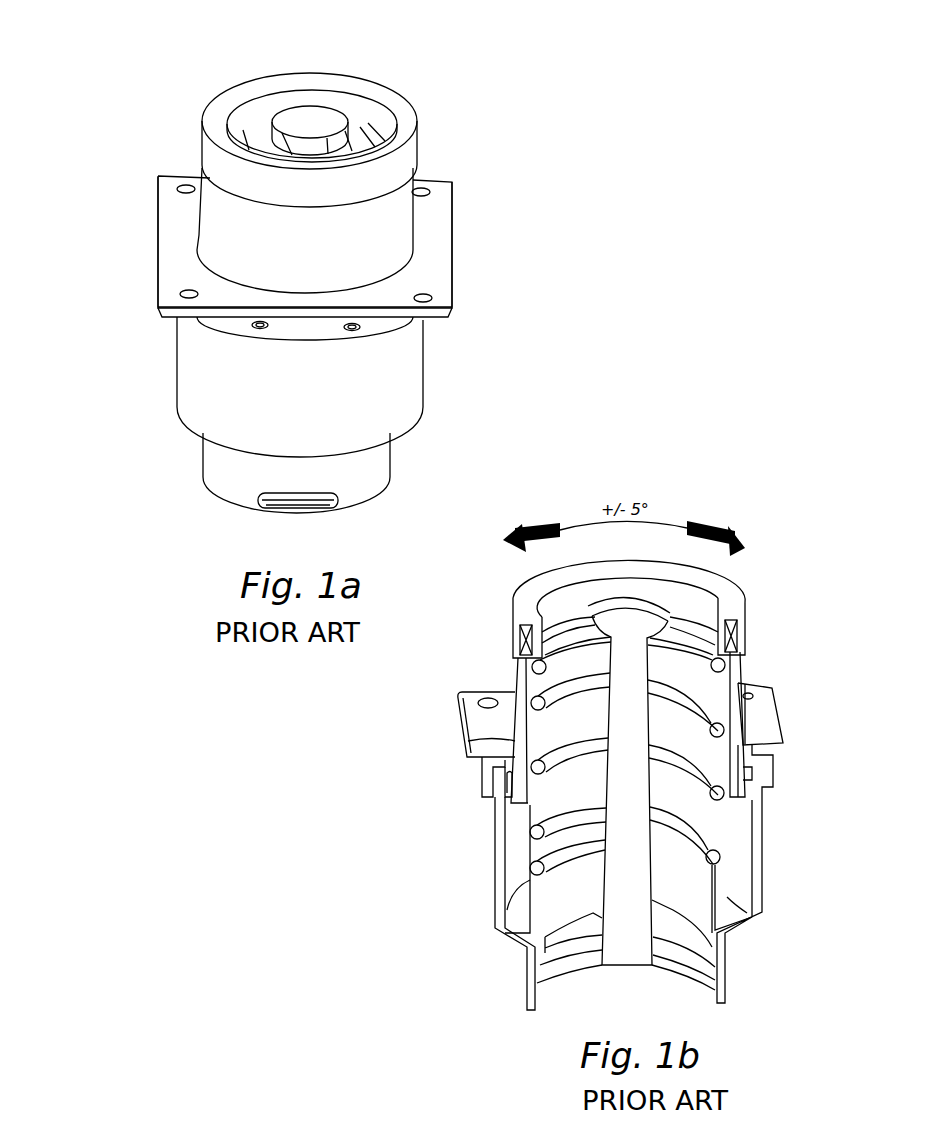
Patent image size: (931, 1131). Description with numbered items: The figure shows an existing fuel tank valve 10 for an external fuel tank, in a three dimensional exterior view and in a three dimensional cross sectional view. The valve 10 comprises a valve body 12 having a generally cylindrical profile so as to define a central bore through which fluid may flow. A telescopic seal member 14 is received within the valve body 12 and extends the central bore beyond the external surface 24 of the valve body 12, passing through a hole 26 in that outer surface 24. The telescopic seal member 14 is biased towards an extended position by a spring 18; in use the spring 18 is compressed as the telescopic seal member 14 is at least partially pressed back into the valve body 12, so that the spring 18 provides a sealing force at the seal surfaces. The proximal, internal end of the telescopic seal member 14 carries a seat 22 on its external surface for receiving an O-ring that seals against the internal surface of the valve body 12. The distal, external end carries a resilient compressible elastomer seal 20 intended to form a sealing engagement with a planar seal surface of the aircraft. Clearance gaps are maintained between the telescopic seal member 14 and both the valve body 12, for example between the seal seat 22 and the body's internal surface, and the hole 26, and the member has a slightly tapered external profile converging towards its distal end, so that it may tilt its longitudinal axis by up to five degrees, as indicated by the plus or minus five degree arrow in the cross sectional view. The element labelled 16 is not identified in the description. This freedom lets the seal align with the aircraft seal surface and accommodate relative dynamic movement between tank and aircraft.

In FIG. 1A, the valve 10 is at (163, 118).
In FIG. 1A, the valve body 12 is at (392, 386).
In FIG. 1B, the valve body 12 is at (760, 855).
In FIG. 1A, the telescopic seal member 14 is at (392, 212).
In FIG. 1B, the telescopic seal member 14 is at (740, 680).
In FIG. 1A, the central boss / stem 16 is at (304, 118).
In FIG. 1B, the central boss / stem 16 is at (670, 615).
In FIG. 1A, the spring 18 is at (392, 112).
In FIG. 1B, the spring 18 is at (737, 653).
In FIG. 1A, the compressible elastomer seal 20 is at (403, 156).
In FIG. 1B, the compressible elastomer seal 20 is at (513, 628).
In FIG. 1B, the seat 22 is at (483, 796).
In FIG. 1A, the external surface 24 is at (427, 286).
In FIG. 1B, the external surface 24 is at (458, 698).
In FIG. 1A, the hole 26 is at (397, 242).
In FIG. 1B, the hole 26 is at (468, 752).